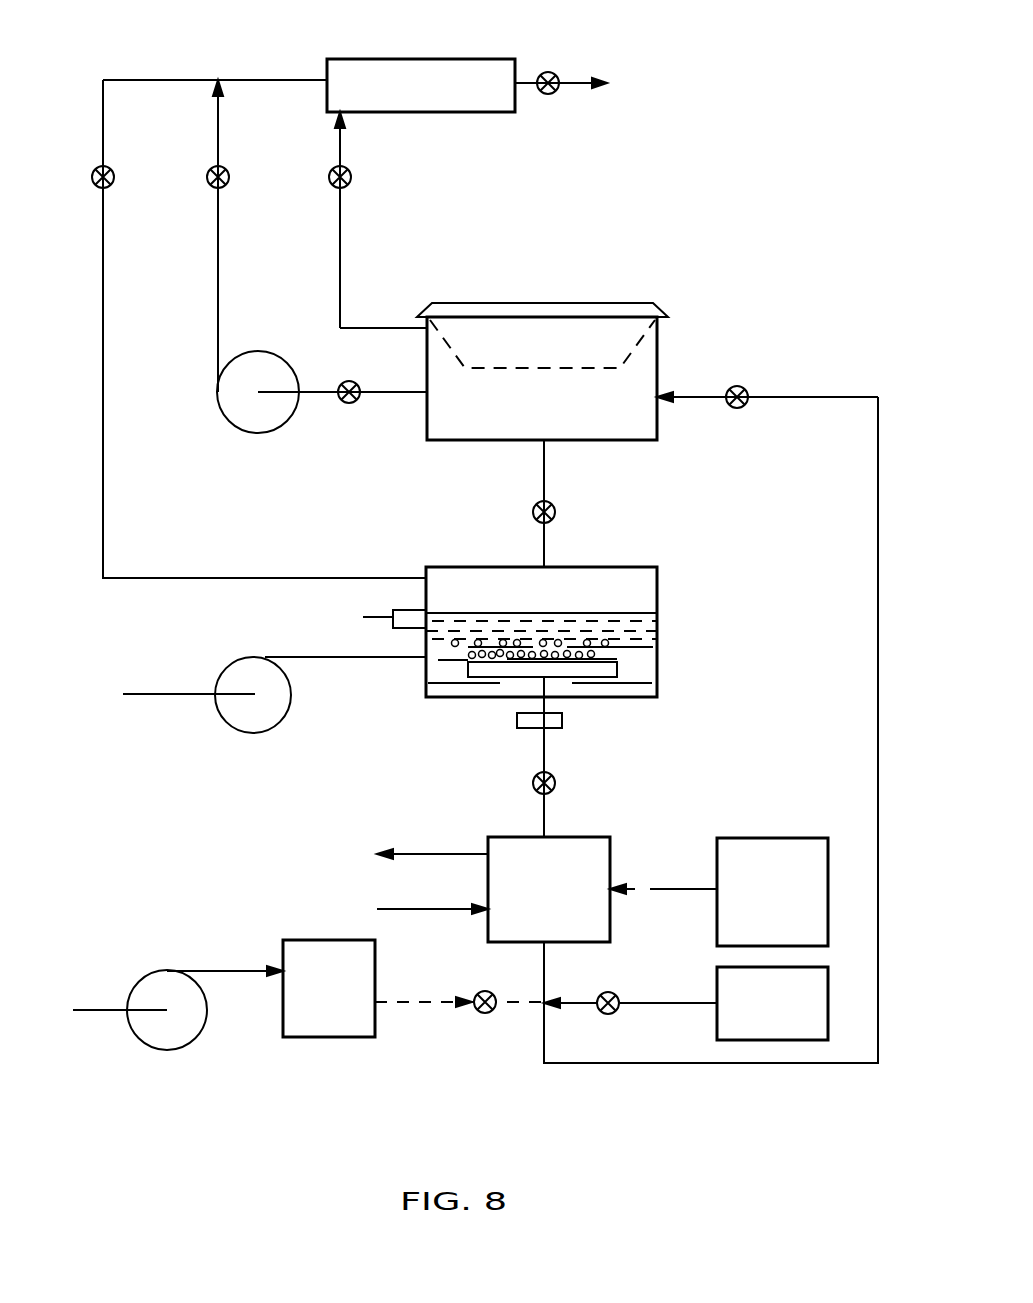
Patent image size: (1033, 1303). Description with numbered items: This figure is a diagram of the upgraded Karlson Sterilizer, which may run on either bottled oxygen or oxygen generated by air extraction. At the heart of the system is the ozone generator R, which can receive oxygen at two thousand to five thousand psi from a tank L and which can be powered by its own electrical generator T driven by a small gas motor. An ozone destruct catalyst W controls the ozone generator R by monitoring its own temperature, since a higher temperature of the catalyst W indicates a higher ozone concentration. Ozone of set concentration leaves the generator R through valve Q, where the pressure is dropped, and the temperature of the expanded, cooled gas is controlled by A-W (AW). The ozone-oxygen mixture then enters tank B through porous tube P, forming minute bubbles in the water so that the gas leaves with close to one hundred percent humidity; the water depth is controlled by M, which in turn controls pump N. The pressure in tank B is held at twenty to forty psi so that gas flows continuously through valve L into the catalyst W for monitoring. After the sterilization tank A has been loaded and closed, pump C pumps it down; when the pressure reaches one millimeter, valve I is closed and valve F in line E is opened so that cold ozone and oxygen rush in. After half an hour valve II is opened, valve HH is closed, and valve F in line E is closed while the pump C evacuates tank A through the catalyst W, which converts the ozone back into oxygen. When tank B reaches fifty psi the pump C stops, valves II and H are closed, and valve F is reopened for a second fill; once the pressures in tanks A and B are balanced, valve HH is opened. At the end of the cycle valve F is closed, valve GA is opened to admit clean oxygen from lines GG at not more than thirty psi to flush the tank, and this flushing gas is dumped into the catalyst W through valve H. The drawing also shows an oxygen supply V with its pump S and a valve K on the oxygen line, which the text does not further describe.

The sterilization tank A is at (542, 338).
The tank B is at (492, 593).
The pump C is at (232, 395).
The line E is at (545, 545).
The valve F is at (534, 505).
The valve H is at (330, 172).
The valve HH is at (560, 75).
The valve I is at (352, 382).
The valve II is at (208, 172).
The valve K is at (615, 993).
The valve / oxygen tank L is at (95, 172).
The water depth control M is at (400, 613).
The pump N is at (248, 678).
The porous tube P is at (612, 665).
The valve Q is at (533, 780).
The ozone generator R is at (596, 870).
The pump S is at (157, 987).
The electrical generator T is at (812, 880).
The oxygen source V is at (298, 950).
The ozone destruct catalyst W is at (413, 75).
The valve GA is at (745, 387).
The lines GG is at (877, 662).
The temperature control AW is at (562, 722).